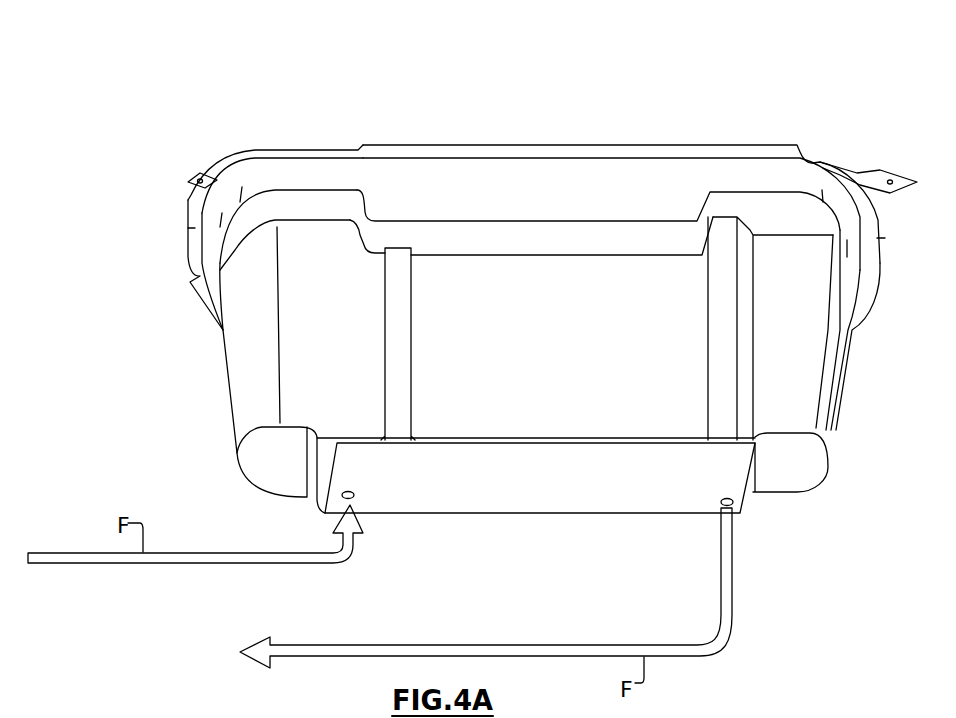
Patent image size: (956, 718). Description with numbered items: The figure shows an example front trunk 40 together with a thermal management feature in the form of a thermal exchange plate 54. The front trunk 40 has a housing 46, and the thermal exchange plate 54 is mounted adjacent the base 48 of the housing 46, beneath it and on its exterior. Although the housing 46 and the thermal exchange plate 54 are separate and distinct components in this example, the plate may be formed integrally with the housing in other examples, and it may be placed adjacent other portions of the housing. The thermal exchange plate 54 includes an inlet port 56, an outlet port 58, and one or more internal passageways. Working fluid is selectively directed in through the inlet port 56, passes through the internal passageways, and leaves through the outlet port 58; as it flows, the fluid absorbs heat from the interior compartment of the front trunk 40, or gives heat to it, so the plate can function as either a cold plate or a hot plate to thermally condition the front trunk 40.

The front trunk 40 is at (801, 55).
The housing 46 is at (745, 125).
The base 48 is at (793, 472).
The thermal exchange plate 54 is at (561, 500).
The inlet port 56 is at (353, 497).
The outlet port 58 is at (733, 504).